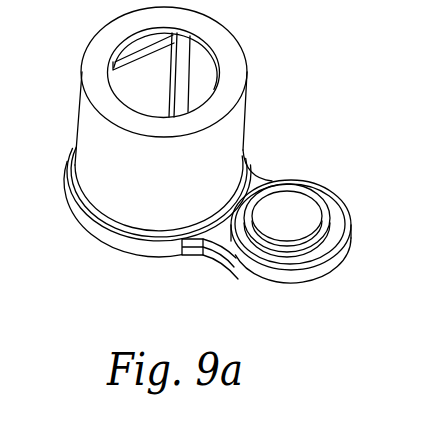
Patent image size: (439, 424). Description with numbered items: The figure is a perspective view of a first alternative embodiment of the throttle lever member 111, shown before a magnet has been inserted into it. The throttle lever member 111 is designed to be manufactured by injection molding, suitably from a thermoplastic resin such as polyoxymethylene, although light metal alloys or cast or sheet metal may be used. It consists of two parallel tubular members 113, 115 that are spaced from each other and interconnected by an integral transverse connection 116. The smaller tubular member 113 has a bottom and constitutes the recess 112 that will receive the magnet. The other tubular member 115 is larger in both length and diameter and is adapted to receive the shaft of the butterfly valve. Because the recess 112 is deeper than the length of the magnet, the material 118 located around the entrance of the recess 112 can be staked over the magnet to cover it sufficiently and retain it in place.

The throttle lever member 111 is at (140, 258).
The recess 112 is at (288, 210).
The tubular member 113 is at (332, 223).
The tubular member 115 is at (235, 123).
The transverse connection 116 is at (218, 232).
The material 118 is at (325, 192).